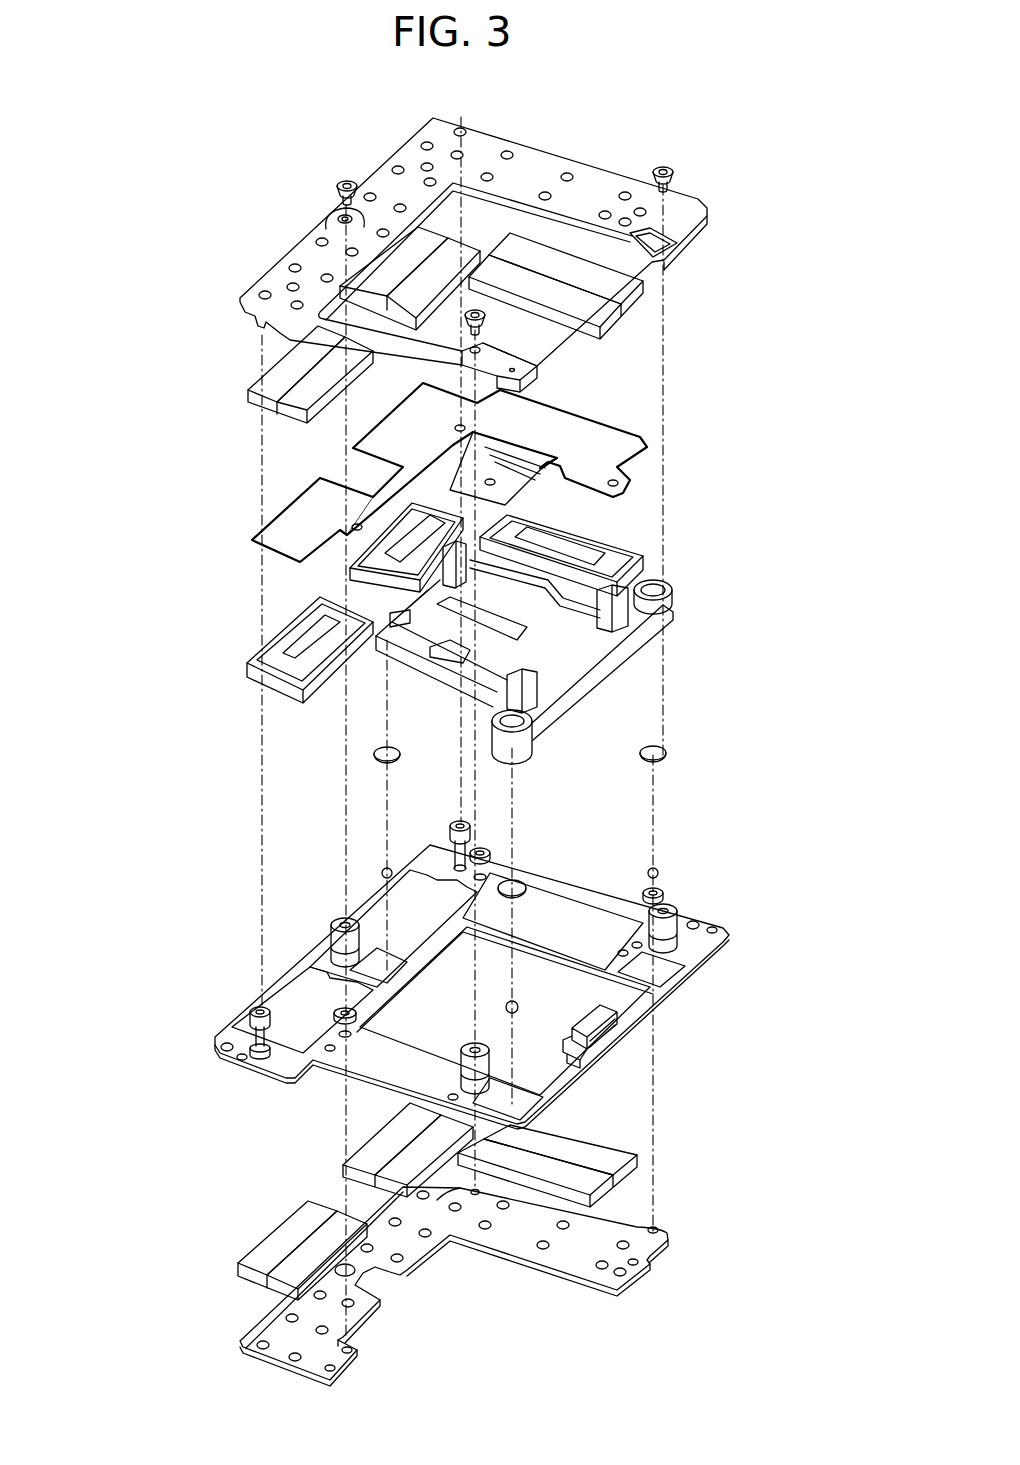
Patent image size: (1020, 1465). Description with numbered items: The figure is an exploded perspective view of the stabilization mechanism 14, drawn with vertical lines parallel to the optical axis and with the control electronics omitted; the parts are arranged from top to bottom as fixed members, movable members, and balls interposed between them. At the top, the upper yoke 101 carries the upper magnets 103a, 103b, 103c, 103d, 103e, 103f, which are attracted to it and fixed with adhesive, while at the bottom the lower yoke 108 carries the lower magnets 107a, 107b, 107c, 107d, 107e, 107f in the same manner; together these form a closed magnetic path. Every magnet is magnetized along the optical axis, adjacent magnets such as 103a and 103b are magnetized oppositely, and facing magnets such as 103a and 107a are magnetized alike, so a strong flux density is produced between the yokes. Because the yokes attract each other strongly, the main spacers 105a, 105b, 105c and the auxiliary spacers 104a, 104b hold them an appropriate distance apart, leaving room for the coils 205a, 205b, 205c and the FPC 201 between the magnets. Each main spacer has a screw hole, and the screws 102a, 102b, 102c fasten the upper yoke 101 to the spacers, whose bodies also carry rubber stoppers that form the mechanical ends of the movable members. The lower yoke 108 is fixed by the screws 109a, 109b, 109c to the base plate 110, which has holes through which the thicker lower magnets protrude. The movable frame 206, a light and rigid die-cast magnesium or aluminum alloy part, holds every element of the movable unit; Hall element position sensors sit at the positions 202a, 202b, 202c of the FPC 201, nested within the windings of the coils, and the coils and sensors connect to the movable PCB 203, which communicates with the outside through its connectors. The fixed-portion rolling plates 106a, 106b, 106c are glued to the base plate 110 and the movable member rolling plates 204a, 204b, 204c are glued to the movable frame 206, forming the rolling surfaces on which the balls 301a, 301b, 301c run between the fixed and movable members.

The stabilization mechanism 14 is at (135, 143).
The upper yoke 101 is at (698, 222).
The screw 102a is at (671, 175).
The screw 102b is at (337, 186).
The screw 102c is at (485, 330).
The upper magnet 103a is at (627, 285).
The upper magnet 103b is at (610, 320).
The upper magnet 103c is at (383, 277).
The upper magnet 103d is at (407, 293).
The upper magnet 103e is at (270, 365).
The upper magnet 103f is at (283, 375).
The FPC 201 is at (617, 448).
The position sensor position 202a is at (570, 427).
The position sensor position 202b is at (410, 425).
The position sensor position 202c is at (320, 515).
The movable PCB 203 is at (550, 647).
The movable member rolling plate 204a is at (668, 750).
The movable member rolling plate 204b is at (527, 895).
The movable member rolling plate 204c is at (372, 752).
The coil 205a is at (607, 548).
The coil 205b is at (375, 585).
The coil 205c is at (285, 648).
The movable frame 206 is at (677, 591).
The ball 301a is at (660, 870).
The ball 301b is at (518, 1013).
The ball 301c is at (382, 873).
The auxiliary spacer 104a is at (472, 840).
The auxiliary spacer 104b is at (252, 1020).
The main spacer 105a is at (680, 920).
The main spacer 105b is at (489, 1067).
The main spacer 105c is at (337, 938).
The fixed-portion rolling plate 106a is at (668, 968).
The fixed-portion rolling plate 106b is at (525, 1100).
The fixed-portion rolling plate 106c is at (350, 978).
The lower magnet 107a is at (617, 1162).
The lower magnet 107b is at (587, 1182).
The lower magnet 107c is at (373, 1153).
The lower magnet 107d is at (400, 1170).
The lower magnet 107e is at (273, 1245).
The lower magnet 107f is at (293, 1270).
The lower yoke 108 is at (280, 1347).
The screw 109a is at (667, 892).
The screw 109b is at (490, 853).
The screw 109c is at (340, 1020).
The base plate 110 is at (383, 1057).